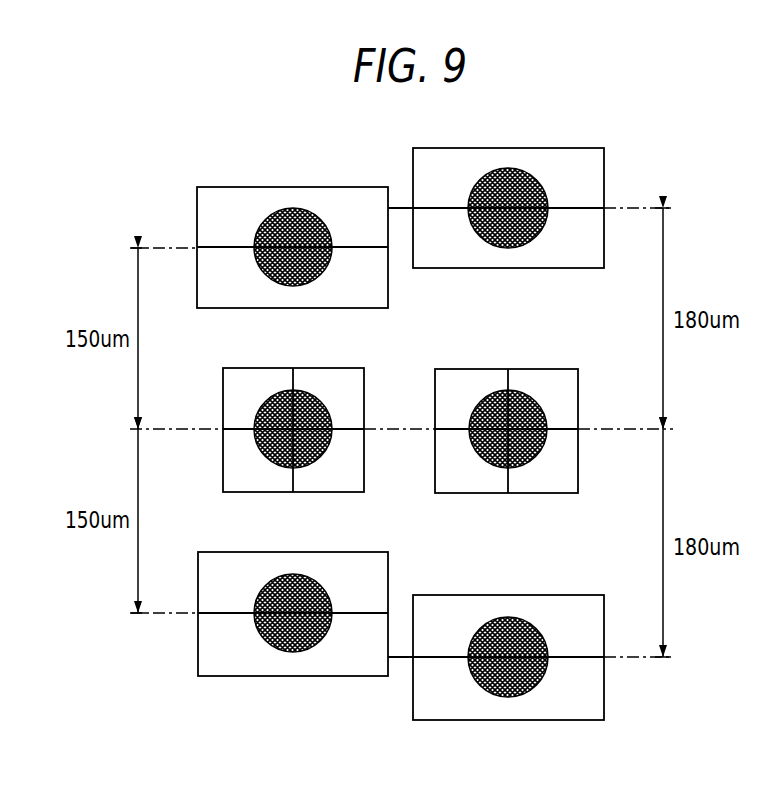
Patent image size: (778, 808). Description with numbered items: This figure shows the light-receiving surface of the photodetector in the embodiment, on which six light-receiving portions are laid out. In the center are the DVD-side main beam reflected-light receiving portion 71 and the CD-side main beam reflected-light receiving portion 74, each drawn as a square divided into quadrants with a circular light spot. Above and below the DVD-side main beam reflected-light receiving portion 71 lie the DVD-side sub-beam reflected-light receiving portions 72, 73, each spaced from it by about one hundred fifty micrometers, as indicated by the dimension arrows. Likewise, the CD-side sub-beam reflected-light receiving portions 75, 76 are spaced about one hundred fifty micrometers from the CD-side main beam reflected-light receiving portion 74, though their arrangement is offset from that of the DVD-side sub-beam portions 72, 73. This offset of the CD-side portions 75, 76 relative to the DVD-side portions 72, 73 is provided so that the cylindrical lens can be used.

The DVD-side main beam reflected-light receiving portion 71 is at (330, 368).
The DVD-side sub-beam reflected-light receiving portion 72 is at (352, 187).
The DVD-side sub-beam reflected-light receiving portion 73 is at (375, 552).
The CD-side main beam reflected-light receiving portion 74 is at (550, 369).
The CD-side sub-beam reflected-light receiving portion 75 is at (577, 148).
The CD-side sub-beam reflected-light receiving portion 76 is at (571, 595).